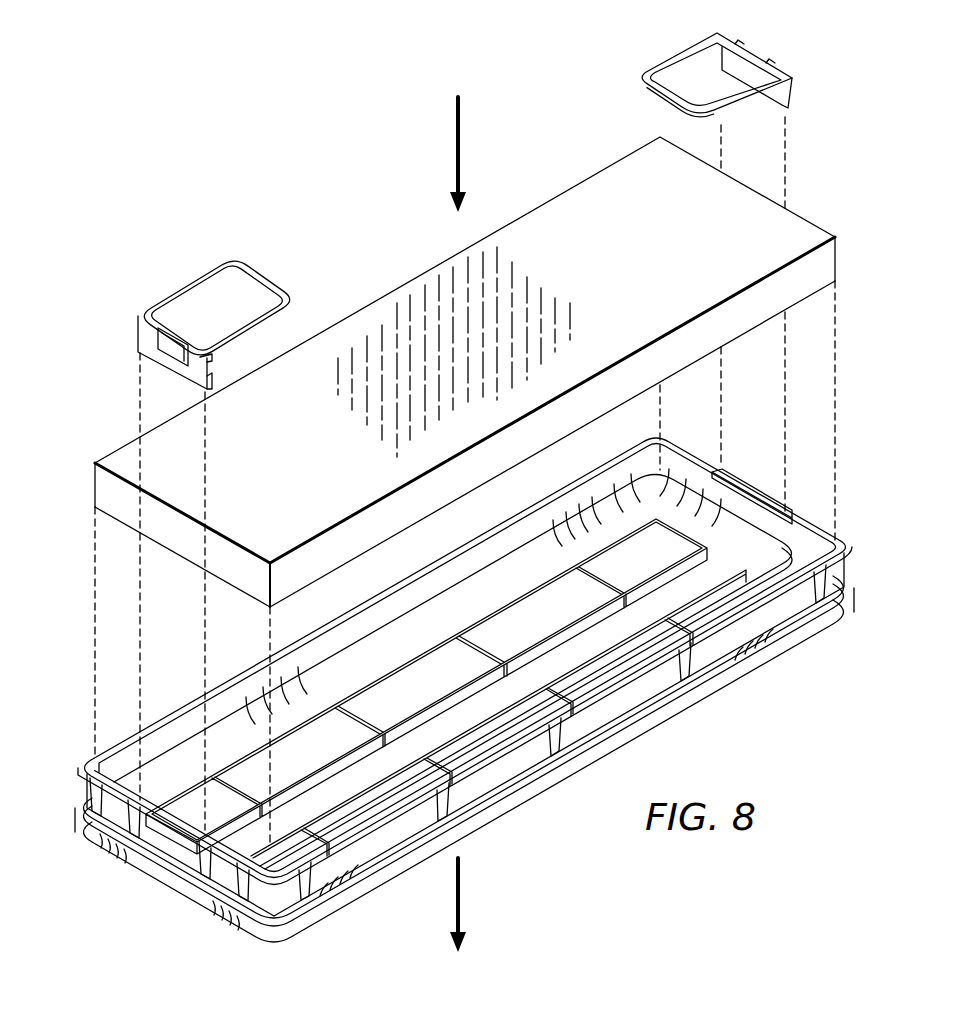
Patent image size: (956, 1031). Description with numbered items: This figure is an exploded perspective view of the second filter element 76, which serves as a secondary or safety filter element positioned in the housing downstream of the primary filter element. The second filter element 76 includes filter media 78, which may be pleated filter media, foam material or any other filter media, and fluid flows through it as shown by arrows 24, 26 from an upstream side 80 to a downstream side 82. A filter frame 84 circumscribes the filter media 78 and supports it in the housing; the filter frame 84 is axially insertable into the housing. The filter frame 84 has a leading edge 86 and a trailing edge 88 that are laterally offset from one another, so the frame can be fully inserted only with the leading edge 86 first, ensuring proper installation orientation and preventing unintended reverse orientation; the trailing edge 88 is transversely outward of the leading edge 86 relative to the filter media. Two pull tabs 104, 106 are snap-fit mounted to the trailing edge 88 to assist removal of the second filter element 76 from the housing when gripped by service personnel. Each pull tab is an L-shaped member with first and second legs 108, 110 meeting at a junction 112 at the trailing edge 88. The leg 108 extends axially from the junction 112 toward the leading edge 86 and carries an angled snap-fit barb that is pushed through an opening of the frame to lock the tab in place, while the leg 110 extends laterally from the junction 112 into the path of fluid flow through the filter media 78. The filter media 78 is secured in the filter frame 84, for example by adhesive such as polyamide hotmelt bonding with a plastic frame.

The arrow 24 is at (445, 150).
The arrow 26 is at (466, 898).
The second filter element 76 is at (78, 458).
The filter media 78 is at (126, 508).
The upstream side 80 is at (592, 200).
The downstream side 82 is at (568, 443).
The filter frame 84 is at (88, 802).
The leading edge 86 is at (132, 862).
The trailing edge 88 is at (82, 762).
The pull tab 104 is at (243, 326).
The pull tab 106 is at (670, 58).
The first leg 108 is at (215, 380).
The second leg 110 is at (268, 329).
The junction 112 is at (217, 360).